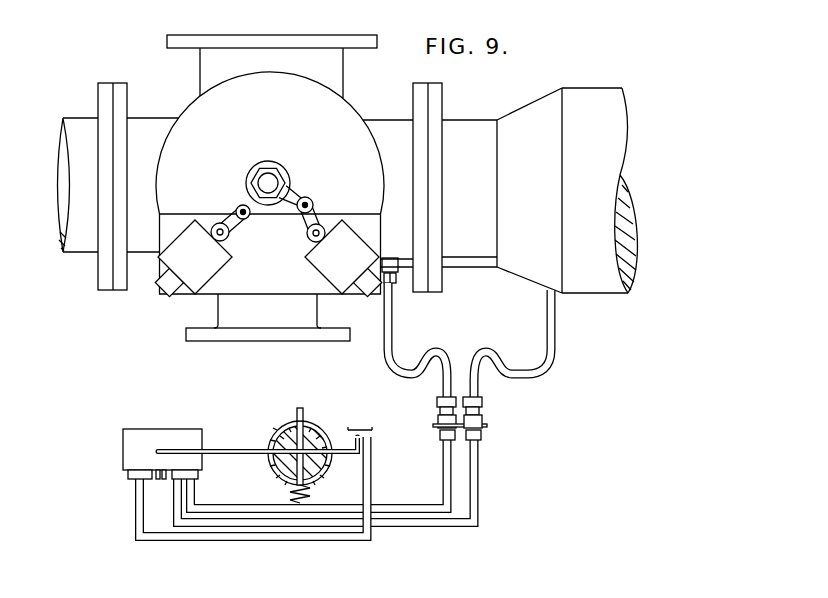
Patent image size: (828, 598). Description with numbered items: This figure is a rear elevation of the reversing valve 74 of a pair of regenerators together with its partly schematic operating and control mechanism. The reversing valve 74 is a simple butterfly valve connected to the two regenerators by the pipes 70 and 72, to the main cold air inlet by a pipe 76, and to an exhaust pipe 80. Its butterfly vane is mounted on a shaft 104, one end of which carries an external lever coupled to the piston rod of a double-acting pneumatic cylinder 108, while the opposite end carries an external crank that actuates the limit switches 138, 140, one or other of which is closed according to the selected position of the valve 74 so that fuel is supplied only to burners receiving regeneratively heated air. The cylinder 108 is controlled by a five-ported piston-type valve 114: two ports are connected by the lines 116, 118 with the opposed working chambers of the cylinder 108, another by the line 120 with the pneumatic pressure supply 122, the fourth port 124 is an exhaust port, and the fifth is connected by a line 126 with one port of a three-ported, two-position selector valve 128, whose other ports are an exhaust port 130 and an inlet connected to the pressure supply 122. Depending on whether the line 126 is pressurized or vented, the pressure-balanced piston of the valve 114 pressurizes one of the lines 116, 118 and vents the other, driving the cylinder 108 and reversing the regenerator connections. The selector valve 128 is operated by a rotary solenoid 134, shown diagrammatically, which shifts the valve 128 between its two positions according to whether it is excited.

The pipe 70 is at (597, 97).
The pipe 72 is at (70, 118).
The reversing valve 74 is at (182, 90).
The pipe 76 is at (262, 330).
The exhaust pipe 80 is at (320, 63).
The shaft 104 is at (272, 183).
The double-acting pneumatic cylinder 108 is at (470, 259).
The piston-type valve 114 is at (153, 437).
The line 116 is at (396, 331).
The line 118 is at (552, 310).
The line 120 is at (278, 540).
The pneumatic pressure supply 122 is at (368, 418).
The exhaust port 124 is at (160, 480).
The line 126 is at (234, 449).
The selector valve 128 is at (312, 428).
The exhaust port 130 is at (297, 408).
The rotary solenoid 134 is at (310, 491).
The limit switch 138 is at (360, 270).
The limit switch 140 is at (213, 270).